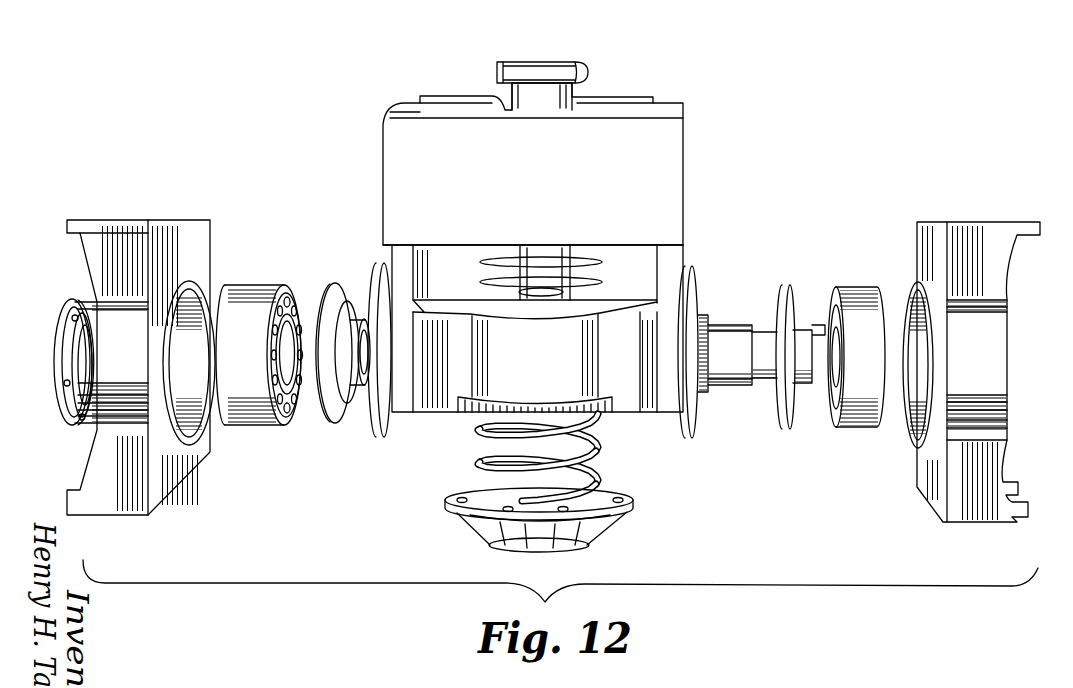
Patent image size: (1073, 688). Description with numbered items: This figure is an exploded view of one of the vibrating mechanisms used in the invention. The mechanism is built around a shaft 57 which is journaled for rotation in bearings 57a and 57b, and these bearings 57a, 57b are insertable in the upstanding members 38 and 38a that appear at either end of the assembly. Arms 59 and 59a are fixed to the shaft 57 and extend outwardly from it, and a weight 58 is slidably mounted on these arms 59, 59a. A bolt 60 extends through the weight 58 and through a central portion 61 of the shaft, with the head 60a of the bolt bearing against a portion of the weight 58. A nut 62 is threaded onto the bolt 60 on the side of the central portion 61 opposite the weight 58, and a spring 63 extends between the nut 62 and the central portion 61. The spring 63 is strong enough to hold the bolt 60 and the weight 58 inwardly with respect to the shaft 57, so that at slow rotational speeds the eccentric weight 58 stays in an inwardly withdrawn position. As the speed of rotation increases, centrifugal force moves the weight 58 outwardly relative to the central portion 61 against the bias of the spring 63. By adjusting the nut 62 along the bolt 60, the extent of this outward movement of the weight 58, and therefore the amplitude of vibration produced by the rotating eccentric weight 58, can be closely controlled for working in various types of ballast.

The upstanding member 38 is at (997, 279).
The upstanding member 38a is at (90, 248).
The shaft 57 is at (762, 340).
The bearing 57a is at (855, 290).
The bearing 57b is at (253, 290).
The weight 58 is at (505, 130).
The arm 59 is at (683, 253).
The arm 59a is at (390, 256).
The bolt 60 is at (573, 92).
The head of the bolt 60a is at (557, 63).
The central portion of the shaft 61 is at (447, 393).
The nut 62 is at (608, 526).
The spring 63 is at (598, 443).